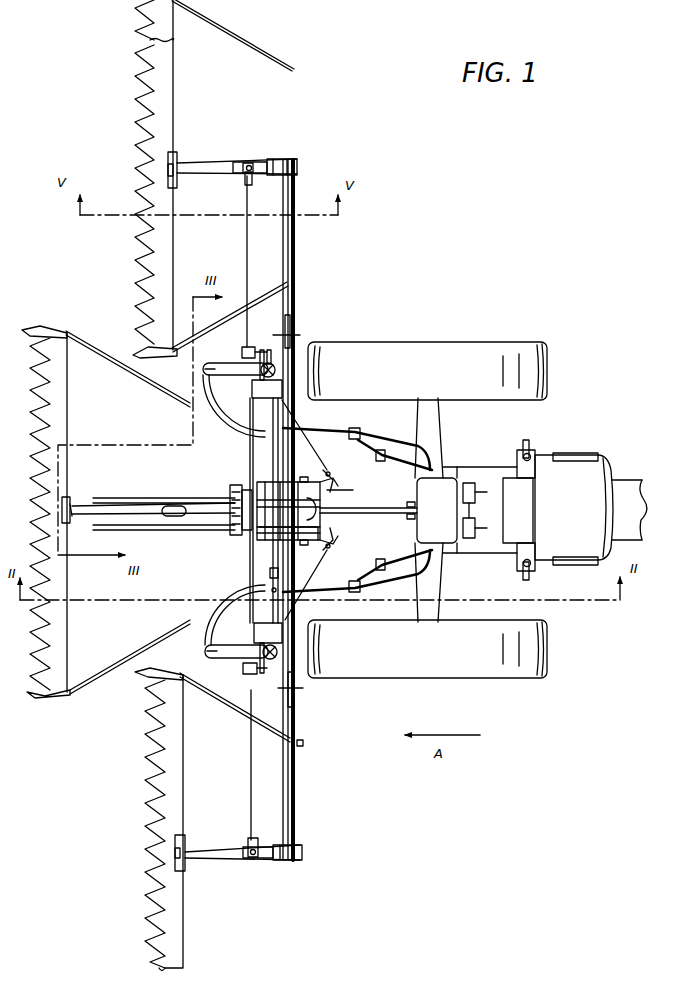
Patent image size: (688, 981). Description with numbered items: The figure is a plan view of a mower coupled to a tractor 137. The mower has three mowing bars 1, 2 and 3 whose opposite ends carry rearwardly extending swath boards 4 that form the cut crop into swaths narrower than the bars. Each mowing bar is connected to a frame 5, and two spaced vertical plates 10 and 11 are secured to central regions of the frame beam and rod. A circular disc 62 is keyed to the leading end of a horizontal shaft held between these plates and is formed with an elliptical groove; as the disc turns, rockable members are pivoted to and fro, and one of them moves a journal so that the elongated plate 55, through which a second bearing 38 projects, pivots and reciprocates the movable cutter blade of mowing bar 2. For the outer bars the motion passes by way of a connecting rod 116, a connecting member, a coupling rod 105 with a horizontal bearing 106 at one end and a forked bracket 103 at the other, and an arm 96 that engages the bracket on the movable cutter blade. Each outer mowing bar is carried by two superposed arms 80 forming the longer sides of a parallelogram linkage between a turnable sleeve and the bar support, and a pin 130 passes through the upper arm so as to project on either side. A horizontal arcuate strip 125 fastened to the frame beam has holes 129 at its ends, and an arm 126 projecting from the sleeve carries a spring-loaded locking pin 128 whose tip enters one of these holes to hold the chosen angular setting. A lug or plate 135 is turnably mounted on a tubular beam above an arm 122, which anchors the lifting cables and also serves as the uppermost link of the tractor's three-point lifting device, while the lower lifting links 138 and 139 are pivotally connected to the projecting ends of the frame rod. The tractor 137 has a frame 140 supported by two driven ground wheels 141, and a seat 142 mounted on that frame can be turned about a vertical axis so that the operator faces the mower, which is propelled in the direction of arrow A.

The mowing bar 1 is at (143, 53).
The mowing bar 2 is at (68, 410).
The mowing bar 3 is at (150, 848).
The swath board 4 is at (258, 43).
The frame 5 is at (278, 445).
The vertical plate 10 is at (287, 483).
The vertical plate 11 is at (287, 540).
The bearing 38 is at (173, 518).
The elongated plate 55 is at (140, 508).
The circular disc 62 is at (230, 487).
The arm 80 is at (293, 267).
The arm 96 is at (225, 163).
The forked bracket 103 is at (243, 178).
The coupling rod 105 is at (247, 253).
The horizontal bearing 106 is at (242, 352).
The connecting rod 116 is at (247, 457).
The arm 122 is at (392, 500).
The arcuate strip 125 is at (240, 432).
The arm 126 is at (242, 372).
The locking pin 128 is at (213, 382).
The hole 129 is at (277, 577).
The pin 130 is at (300, 334).
The lug or plate 135 is at (347, 488).
The tractor 137 is at (637, 480).
The lower lifting link 138 is at (332, 586).
The lower lifting link 139 is at (403, 430).
The frame 140 is at (492, 475).
The driven ground wheel 141 is at (541, 388).
The seat 142 is at (587, 560).